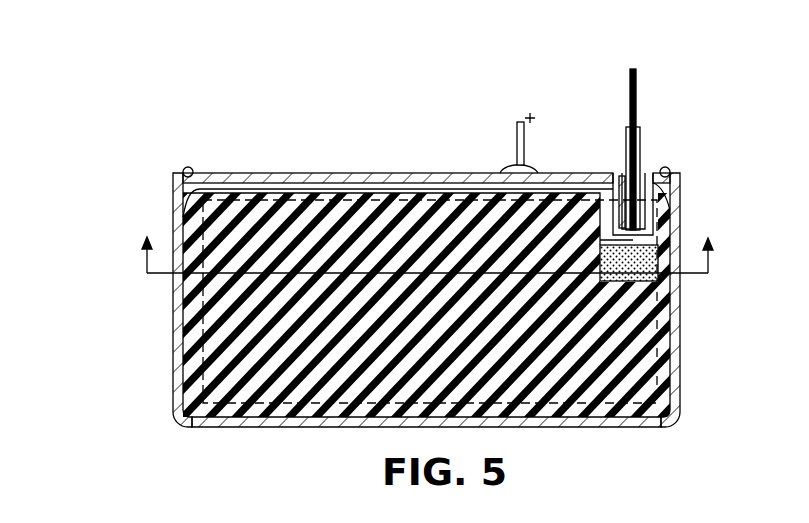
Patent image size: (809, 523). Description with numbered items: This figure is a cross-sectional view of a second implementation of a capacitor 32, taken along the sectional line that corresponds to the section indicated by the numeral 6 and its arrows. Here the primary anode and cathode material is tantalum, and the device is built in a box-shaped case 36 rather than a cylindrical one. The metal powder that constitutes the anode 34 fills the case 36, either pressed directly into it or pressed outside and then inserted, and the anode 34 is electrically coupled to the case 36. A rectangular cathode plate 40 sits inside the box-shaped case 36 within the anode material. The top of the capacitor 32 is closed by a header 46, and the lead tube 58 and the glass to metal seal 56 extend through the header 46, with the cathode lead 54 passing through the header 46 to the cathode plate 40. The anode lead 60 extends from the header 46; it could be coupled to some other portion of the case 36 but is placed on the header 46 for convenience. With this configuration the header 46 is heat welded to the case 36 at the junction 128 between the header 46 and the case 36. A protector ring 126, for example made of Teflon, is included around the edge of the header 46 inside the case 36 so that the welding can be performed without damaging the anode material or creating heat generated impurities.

The capacitor 32 is at (136, 202).
The anode 34 is at (178, 310).
The case 36 is at (677, 385).
The cathode plate 40 is at (650, 245).
The header 46 is at (325, 172).
The cathode lead 54 is at (636, 88).
The glass to metal seal 56 is at (620, 178).
The lead tube 58 is at (640, 150).
The anode lead 60 is at (516, 138).
The protector ring 126 is at (200, 188).
The junction 128 is at (185, 168).
The section line 6- 6 is at (429, 260).